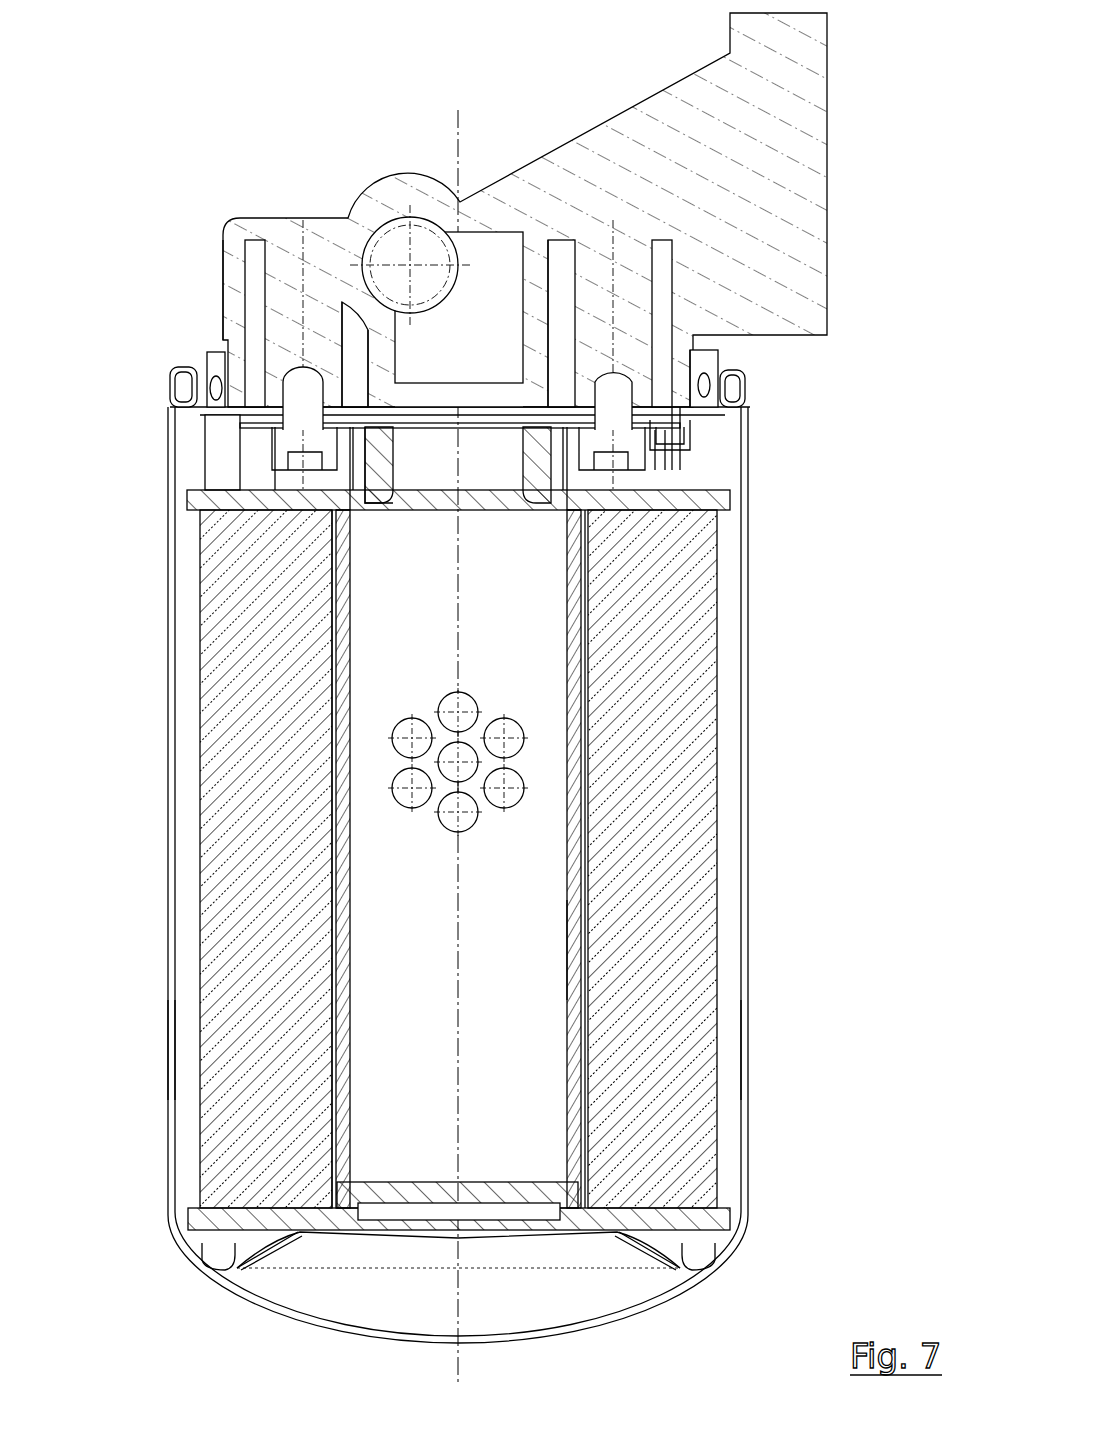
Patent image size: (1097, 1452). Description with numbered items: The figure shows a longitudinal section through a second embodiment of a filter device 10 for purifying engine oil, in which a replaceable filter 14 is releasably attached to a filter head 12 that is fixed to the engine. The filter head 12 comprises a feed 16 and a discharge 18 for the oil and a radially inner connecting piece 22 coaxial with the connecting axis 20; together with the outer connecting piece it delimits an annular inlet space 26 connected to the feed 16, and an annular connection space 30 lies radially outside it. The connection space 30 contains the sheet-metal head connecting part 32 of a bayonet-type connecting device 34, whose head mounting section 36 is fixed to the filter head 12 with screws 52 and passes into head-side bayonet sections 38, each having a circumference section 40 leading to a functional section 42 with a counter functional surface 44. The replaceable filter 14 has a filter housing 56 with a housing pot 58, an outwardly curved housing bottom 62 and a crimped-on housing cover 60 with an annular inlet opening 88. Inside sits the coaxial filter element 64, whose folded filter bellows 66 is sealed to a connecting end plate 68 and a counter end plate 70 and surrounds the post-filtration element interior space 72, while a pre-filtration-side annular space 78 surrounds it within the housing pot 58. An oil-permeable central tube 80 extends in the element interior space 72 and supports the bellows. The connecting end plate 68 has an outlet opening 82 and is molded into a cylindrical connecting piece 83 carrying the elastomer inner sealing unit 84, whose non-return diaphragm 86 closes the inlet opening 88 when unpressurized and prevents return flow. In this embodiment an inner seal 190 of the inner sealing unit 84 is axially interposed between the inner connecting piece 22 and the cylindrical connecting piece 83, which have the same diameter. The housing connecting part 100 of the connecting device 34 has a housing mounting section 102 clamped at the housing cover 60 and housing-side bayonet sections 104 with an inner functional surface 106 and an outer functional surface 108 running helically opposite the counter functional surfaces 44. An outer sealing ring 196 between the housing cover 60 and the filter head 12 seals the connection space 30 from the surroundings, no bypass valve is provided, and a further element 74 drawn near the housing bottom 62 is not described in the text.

The filter device 10 is at (178, 76).
The filter head 12 is at (628, 100).
The replaceable filter 14 is at (158, 1072).
The feed 16 is at (567, 300).
The discharge 18 is at (395, 237).
The connecting axis 20 is at (455, 1100).
The radially inner connecting piece 22 is at (537, 348).
The annular inlet space 26 is at (556, 280).
The connection space 30 is at (215, 455).
The head connecting part 32 is at (628, 435).
The bayonet-type connecting device 34 is at (686, 428).
The head mounting section 36 is at (268, 410).
The head-side bayonet sections 38 is at (657, 450).
The circumference section 40 is at (580, 535).
The functional section 42 is at (665, 450).
The counter functional surface 44 is at (657, 403).
The screws 52 is at (345, 522).
The filter housing 56 is at (170, 805).
The housing pot 58 is at (172, 1020).
The housing cover 60 is at (183, 389).
The housing bottom 62 is at (185, 1255).
The filter element 64 is at (203, 912).
The filter bellows 66 is at (670, 1100).
The connecting end plate 68 is at (712, 497).
The counter end plate 70 is at (200, 1218).
The element interior space 72 is at (525, 1050).
The spring element 74 is at (690, 1265).
The pre-filtration-side annular space 78 is at (735, 1056).
The central tube 80 is at (577, 955).
The outlet opening 82 is at (410, 500).
The cylindrical connecting piece 83 is at (535, 482).
The inner sealing unit 84 is at (388, 413).
The non-return diaphragm 86 is at (355, 440).
The inlet opening 88 is at (352, 403).
The housing connecting part 100 is at (745, 390).
The housing mounting section 102 is at (722, 342).
The housing-side bayonet sections 104 is at (672, 480).
The inner functional surface 106 is at (680, 450).
The outer functional surface 108 is at (690, 400).
The inner seal 190 is at (377, 392).
The outer sealing ring 196 is at (215, 362).